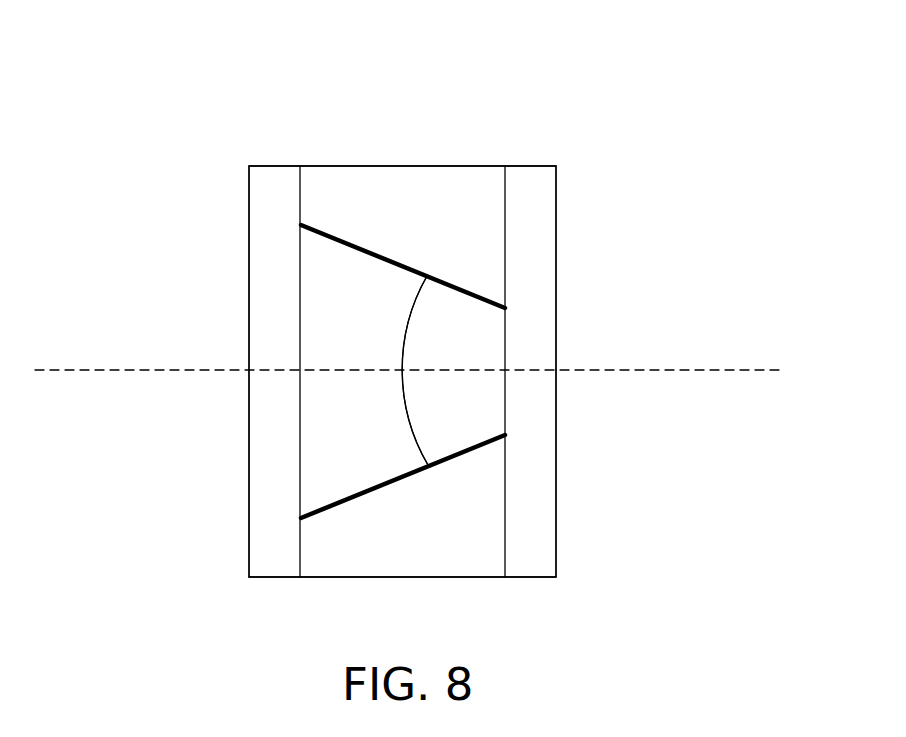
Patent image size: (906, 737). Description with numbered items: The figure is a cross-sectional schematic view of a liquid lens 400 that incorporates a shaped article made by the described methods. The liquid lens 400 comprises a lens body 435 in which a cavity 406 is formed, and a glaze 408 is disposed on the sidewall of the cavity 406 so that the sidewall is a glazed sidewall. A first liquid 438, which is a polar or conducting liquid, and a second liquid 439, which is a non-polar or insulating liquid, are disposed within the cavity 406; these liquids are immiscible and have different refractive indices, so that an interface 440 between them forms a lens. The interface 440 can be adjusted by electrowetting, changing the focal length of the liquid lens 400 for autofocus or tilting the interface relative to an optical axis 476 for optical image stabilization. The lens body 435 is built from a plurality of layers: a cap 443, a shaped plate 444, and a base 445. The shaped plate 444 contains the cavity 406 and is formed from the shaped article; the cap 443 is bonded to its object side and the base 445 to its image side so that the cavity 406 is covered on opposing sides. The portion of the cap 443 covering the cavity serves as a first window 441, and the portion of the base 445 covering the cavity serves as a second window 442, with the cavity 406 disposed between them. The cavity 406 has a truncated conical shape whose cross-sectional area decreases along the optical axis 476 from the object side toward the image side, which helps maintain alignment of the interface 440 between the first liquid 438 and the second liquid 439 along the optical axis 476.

The liquid lens 400 is at (256, 79).
The lens body 435 is at (249, 163).
The optical axis 476 is at (125, 368).
The glaze 408 is at (347, 245).
The cavity 406 is at (409, 282).
The first liquid 438 is at (322, 277).
The second liquid 439 is at (485, 339).
The first window 441 is at (267, 393).
The interface 440 is at (402, 382).
The cap 443 is at (267, 543).
The second window 442 is at (545, 457).
The base 445 is at (545, 555).
The shaped plate 444 is at (375, 560).